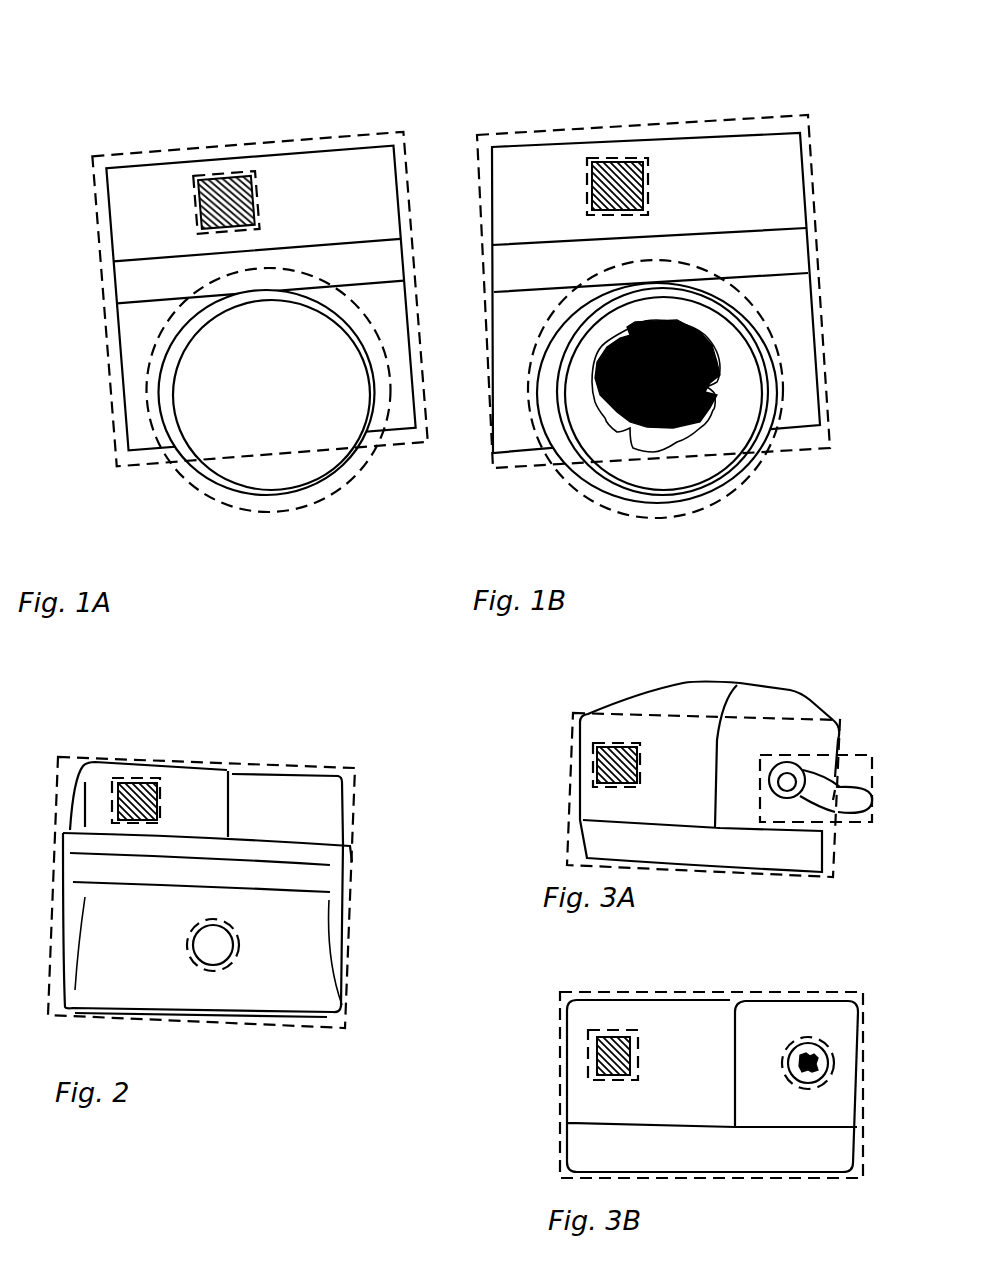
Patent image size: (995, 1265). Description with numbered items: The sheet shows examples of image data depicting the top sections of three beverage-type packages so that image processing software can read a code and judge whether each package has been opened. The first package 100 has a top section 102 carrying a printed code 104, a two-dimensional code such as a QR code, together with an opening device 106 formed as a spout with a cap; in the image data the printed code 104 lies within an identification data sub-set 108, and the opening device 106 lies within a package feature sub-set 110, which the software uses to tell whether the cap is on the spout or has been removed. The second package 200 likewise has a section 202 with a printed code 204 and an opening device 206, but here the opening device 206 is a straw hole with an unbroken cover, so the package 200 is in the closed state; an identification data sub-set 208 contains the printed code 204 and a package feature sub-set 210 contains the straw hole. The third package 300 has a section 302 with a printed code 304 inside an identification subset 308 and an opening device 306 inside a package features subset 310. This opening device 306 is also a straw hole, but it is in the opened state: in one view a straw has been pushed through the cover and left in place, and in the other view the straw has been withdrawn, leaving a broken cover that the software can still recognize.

In FIG. 1A, the package 100 is at (158, 78).
In FIG. 1B, the package 100 is at (566, 60).
In FIG. 1A, the section 102 is at (406, 170).
In FIG. 1B, the section 102 is at (805, 173).
In FIG. 1A, the printed code 104 is at (242, 197).
In FIG. 1B, the printed code 104 is at (645, 186).
In FIG. 1A, the opening device 106 is at (235, 478).
In FIG. 1B, the opening device 106 is at (693, 475).
In FIG. 1A, the identification data sub-set 108 is at (242, 175).
In FIG. 1B, the identification data sub-set 108 is at (603, 158).
In FIG. 1A, the package feature sub-set 110 is at (285, 512).
In FIG. 1B, the package feature sub-set 110 is at (737, 488).
In FIG. 2, the package 200 is at (85, 738).
In FIG. 2, the section 202 is at (287, 767).
In FIG. 2, the printed code 204 is at (147, 790).
In FIG. 2, the opening device 206 is at (213, 947).
In FIG. 2, the identification data sub-set 208 is at (140, 780).
In FIG. 2, the package feature sub-set 210 is at (222, 968).
In FIG. 3A, the package 300 is at (550, 710).
In FIG. 3B, the package 300 is at (540, 1015).
In FIG. 3A, the section 302 is at (570, 797).
In FIG. 3B, the section 302 is at (560, 1103).
In FIG. 3A, the printed code 304 is at (623, 763).
In FIG. 3B, the printed code 304 is at (622, 1055).
In FIG. 3A, the opening device 306 is at (847, 797).
In FIG. 3B, the opening device 306 is at (807, 1073).
In FIG. 3A, the identification subset 308 is at (620, 742).
In FIG. 3B, the identification subset 308 is at (620, 1030).
In FIG. 3A, the package features subset 310 is at (770, 818).
In FIG. 3B, the package features subset 310 is at (788, 1077).